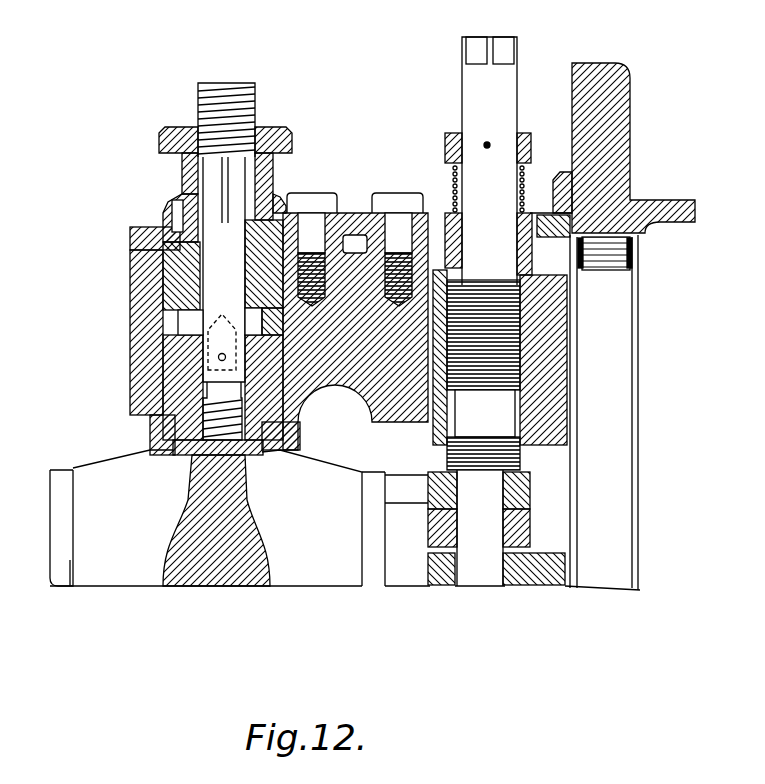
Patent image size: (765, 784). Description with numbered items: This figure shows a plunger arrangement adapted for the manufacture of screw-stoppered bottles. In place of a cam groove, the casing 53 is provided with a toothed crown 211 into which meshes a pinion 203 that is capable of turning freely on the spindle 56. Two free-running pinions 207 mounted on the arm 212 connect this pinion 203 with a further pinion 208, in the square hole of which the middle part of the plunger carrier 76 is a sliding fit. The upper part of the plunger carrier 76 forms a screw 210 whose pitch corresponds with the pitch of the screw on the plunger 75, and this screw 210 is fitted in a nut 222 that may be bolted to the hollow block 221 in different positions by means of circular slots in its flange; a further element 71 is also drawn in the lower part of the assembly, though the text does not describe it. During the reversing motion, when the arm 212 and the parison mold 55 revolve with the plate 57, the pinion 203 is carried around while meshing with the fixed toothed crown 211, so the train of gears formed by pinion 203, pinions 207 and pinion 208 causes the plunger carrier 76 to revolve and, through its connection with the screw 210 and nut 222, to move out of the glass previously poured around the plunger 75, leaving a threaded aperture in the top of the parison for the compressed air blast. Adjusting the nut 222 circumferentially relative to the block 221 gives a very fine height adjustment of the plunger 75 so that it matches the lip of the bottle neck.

The casing 53 is at (608, 142).
The parison mold 55 is at (345, 520).
The spindle 56 is at (497, 311).
The plate 57 is at (604, 412).
The shelf member 71 is at (285, 443).
The plunger 75 is at (215, 378).
The plunger carrier 76 is at (224, 298).
The pinion 203 is at (452, 213).
The free-running pinions 207 is at (372, 212).
The pinion 208 is at (175, 220).
The screw 210 is at (243, 96).
The toothed crown 211 is at (541, 215).
The arm 212 is at (343, 373).
The hollow block 221 is at (264, 168).
The nut 222 is at (292, 134).